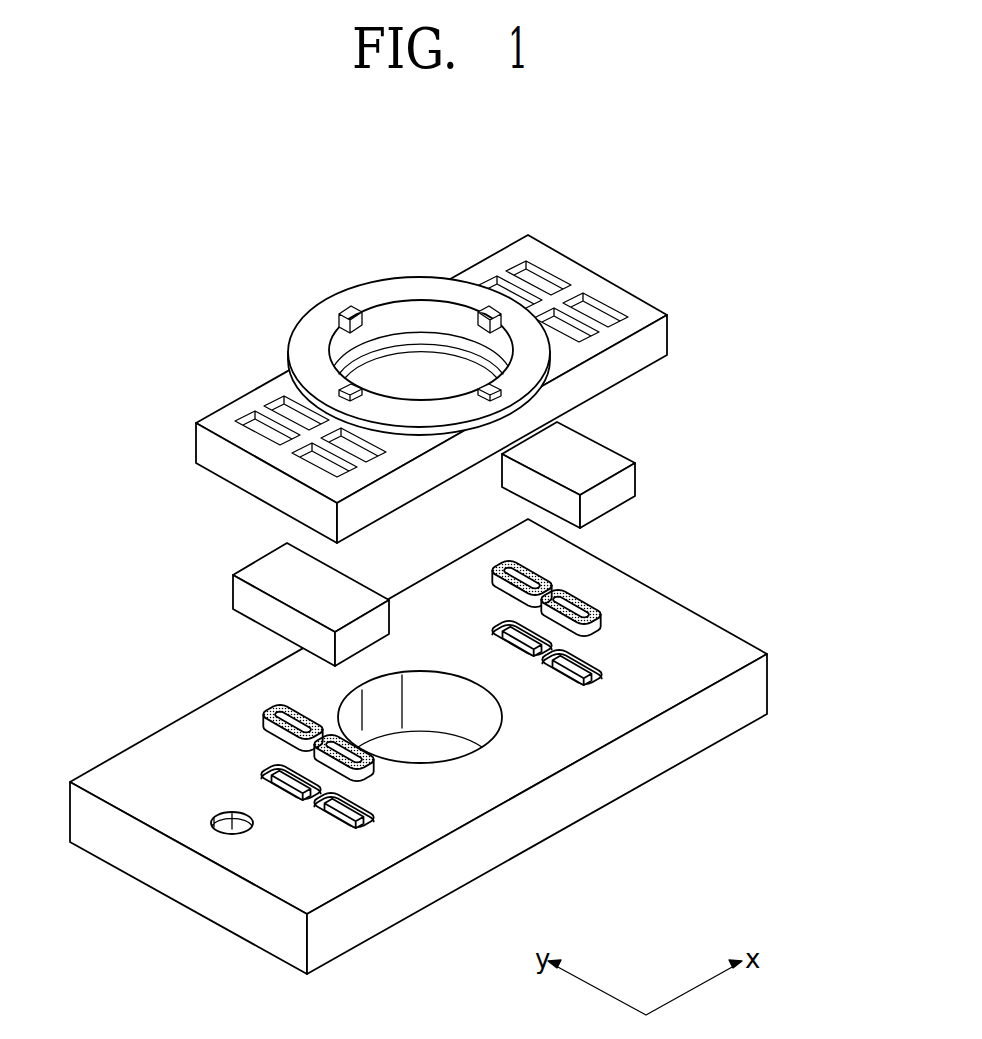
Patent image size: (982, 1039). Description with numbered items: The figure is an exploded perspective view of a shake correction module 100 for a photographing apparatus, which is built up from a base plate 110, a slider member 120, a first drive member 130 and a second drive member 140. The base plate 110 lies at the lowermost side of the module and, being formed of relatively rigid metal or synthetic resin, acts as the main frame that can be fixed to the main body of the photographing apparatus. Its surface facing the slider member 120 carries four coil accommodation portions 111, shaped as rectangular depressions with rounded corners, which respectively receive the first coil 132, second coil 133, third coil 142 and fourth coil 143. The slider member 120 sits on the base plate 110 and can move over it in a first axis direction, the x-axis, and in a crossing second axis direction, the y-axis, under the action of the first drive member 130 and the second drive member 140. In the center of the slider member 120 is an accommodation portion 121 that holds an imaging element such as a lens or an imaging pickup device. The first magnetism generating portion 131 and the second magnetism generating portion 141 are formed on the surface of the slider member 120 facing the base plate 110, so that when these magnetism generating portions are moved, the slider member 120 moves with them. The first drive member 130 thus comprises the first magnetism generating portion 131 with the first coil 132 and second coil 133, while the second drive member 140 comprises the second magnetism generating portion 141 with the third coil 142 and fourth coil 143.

The shake correction module 100 is at (663, 213).
The base plate 110 is at (197, 888).
The coil accommodation portions 111 is at (268, 781).
The slider member 120 is at (416, 369).
The accommodation portion 121 is at (400, 312).
The first drive member 130 is at (667, 517).
The first magnetism generating portion 131 is at (637, 463).
The first coil 132 is at (592, 612).
The second coil 133 is at (555, 566).
The second drive member 140 is at (214, 658).
The second magnetism generating portion 141 is at (250, 601).
The third coil 142 is at (282, 717).
The fourth coil 143 is at (306, 757).